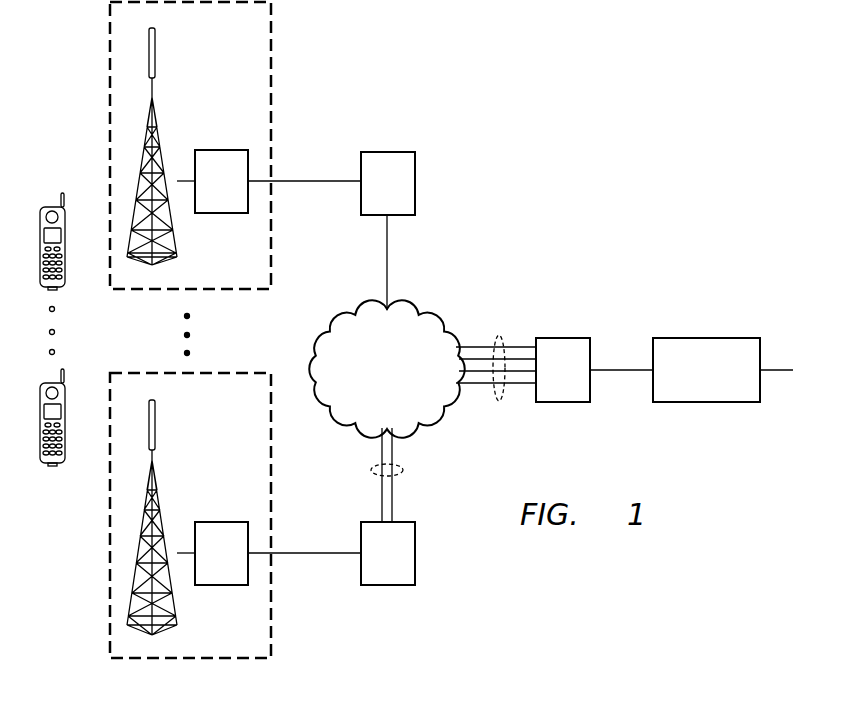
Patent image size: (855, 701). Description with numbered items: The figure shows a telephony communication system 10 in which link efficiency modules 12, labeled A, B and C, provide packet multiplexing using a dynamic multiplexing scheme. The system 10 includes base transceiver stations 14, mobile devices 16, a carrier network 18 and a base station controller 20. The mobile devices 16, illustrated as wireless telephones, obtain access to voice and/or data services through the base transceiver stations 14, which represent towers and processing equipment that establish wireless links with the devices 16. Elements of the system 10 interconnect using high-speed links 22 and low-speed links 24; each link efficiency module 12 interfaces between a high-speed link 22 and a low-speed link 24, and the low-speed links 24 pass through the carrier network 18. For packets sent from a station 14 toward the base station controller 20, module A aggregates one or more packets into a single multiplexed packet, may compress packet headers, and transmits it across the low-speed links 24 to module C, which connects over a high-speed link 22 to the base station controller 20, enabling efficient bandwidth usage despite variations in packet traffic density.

The telephony communication system 10 is at (540, 179).
The link efficiency module 12 is at (388, 152).
The base transceiver station 14 is at (230, 110).
The mobile device 16 is at (53, 206).
The carrier network 18 is at (402, 381).
The base station controller 20 is at (707, 338).
The high-speed link 22 is at (322, 181).
The low-speed link 24 is at (390, 265).